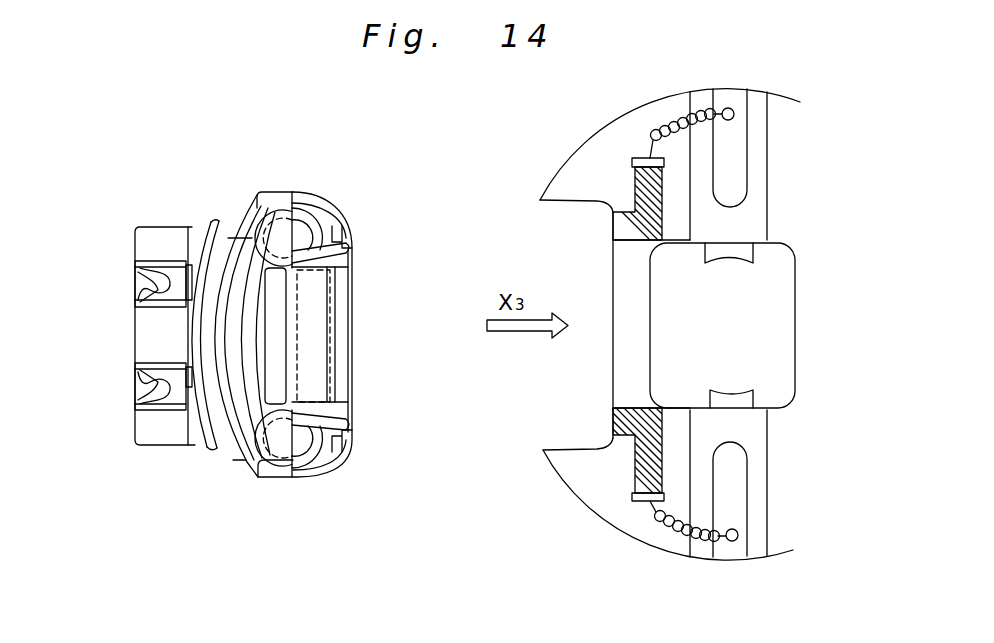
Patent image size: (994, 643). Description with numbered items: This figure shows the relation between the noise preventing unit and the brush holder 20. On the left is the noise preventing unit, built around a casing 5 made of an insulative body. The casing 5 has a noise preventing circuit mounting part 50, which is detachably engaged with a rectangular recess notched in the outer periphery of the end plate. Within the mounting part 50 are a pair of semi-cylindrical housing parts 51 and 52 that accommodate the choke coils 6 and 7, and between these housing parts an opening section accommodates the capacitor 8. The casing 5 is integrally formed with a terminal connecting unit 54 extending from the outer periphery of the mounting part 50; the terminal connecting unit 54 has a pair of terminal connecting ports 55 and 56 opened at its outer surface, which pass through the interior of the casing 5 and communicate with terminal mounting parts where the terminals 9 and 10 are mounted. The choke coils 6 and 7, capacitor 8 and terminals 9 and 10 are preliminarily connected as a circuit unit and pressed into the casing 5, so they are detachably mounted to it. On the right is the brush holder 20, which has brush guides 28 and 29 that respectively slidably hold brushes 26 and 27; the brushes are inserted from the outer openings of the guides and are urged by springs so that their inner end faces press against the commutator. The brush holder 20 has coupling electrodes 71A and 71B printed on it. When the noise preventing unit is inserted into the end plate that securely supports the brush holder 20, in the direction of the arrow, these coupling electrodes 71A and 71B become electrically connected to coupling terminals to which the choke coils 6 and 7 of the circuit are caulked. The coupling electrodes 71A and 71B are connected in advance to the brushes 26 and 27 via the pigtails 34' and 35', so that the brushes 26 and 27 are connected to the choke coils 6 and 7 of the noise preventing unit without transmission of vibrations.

The casing 5 is at (241, 232).
The noise preventing circuit mounting part 50 is at (300, 186).
The housing part 51 is at (293, 232).
The choke coil 6 is at (313, 228).
The capacitor 8 is at (309, 302).
The choke coil 7 is at (350, 451).
The housing part 52 is at (300, 441).
The terminal 9 is at (142, 273).
The terminal 10 is at (142, 405).
The terminal connecting port 55 is at (146, 290).
The terminal connecting port 56 is at (141, 380).
The terminal connecting unit 54 is at (185, 446).
The brush holder 20 is at (583, 483).
The coupling electrode 71A is at (636, 181).
The coupling electrode 71B is at (637, 468).
The pigtail 34' is at (692, 94).
The pigtail 35' is at (694, 563).
The brush 26 is at (727, 148).
The brush guide 28 is at (752, 190).
The brush 27 is at (732, 487).
The brush guide 29 is at (772, 505).